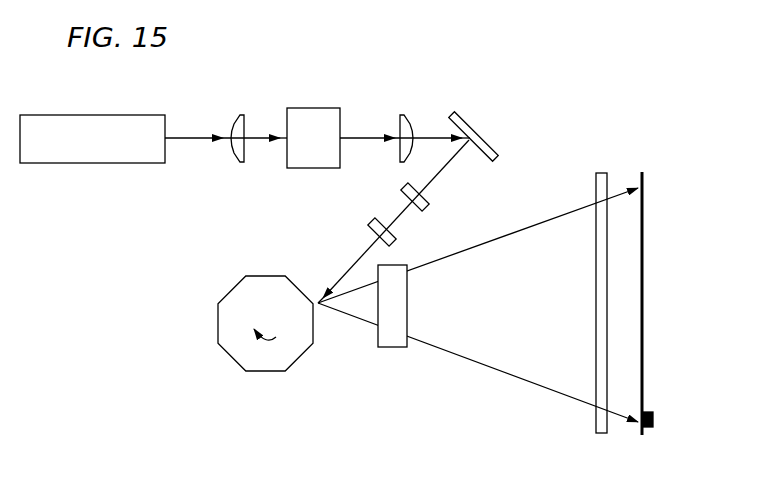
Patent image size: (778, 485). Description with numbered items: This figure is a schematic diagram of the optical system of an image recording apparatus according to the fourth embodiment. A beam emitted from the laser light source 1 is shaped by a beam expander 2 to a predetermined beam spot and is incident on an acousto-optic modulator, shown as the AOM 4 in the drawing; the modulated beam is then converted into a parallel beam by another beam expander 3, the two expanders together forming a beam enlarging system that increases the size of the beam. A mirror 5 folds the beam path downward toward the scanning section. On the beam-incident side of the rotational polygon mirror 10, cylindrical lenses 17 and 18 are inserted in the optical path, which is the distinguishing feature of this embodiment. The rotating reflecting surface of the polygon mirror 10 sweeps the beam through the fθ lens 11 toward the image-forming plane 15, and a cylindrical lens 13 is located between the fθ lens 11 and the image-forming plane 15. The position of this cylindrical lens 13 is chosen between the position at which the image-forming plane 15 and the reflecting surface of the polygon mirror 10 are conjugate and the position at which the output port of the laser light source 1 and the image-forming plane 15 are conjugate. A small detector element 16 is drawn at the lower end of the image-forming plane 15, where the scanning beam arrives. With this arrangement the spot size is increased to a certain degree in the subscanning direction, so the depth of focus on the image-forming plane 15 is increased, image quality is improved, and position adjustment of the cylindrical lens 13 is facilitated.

The laser light source 1 is at (178, 97).
The beam expander 2 is at (250, 101).
The beam expander 3 is at (414, 101).
The acousto-optic modulator (AOM) 4 is at (328, 108).
The reflecting mirror 5 is at (464, 120).
The cylindrical lens 17 is at (426, 196).
The cylindrical lens 18 is at (393, 231).
The rotational polygon mirror 10 is at (237, 355).
The fθ lens 11 is at (393, 347).
The cylindrical lens 13 is at (596, 300).
The image-forming plane 15 is at (644, 273).
The light detector 16 is at (654, 420).